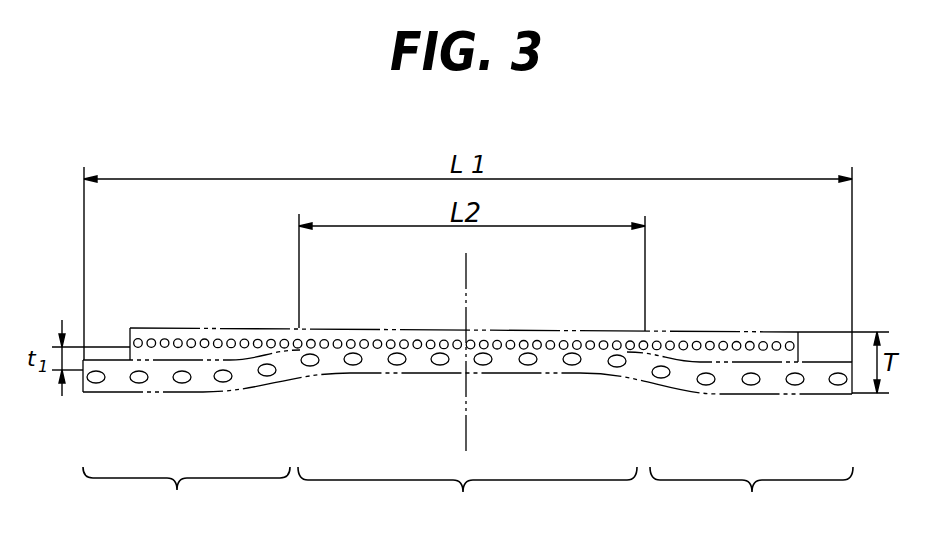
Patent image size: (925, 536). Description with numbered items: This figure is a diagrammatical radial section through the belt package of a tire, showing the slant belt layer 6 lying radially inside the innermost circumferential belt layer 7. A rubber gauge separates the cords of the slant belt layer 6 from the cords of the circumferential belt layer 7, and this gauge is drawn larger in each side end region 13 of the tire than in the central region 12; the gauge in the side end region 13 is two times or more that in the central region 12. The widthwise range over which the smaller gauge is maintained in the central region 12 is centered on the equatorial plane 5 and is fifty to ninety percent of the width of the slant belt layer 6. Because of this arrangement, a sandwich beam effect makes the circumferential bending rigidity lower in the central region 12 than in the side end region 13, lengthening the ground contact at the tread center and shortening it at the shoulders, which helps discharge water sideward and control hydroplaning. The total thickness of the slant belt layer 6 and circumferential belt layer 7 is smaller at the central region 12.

The equatorial plane 5 is at (467, 423).
The slant belt layer 6 is at (817, 380).
The innermost circumferential belt layer 7 is at (776, 341).
The central region 12 is at (467, 494).
The side end region 13 is at (468, 495).